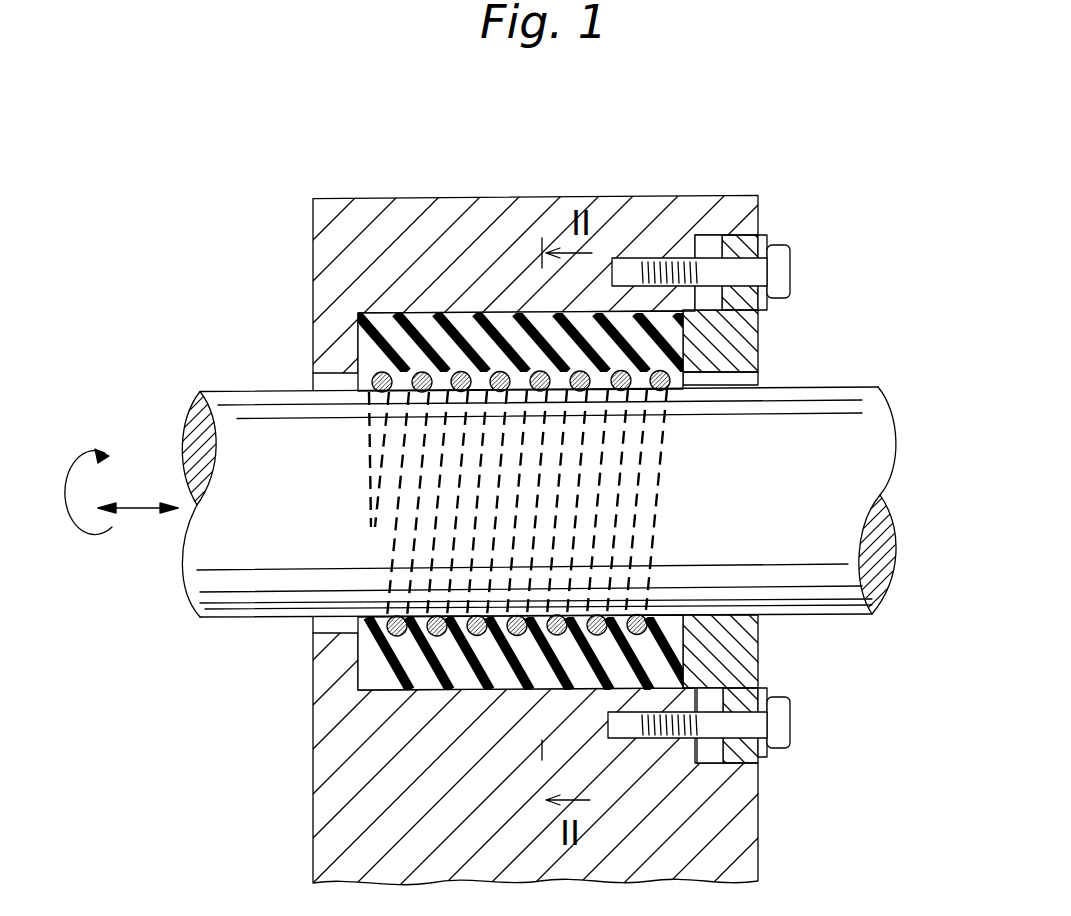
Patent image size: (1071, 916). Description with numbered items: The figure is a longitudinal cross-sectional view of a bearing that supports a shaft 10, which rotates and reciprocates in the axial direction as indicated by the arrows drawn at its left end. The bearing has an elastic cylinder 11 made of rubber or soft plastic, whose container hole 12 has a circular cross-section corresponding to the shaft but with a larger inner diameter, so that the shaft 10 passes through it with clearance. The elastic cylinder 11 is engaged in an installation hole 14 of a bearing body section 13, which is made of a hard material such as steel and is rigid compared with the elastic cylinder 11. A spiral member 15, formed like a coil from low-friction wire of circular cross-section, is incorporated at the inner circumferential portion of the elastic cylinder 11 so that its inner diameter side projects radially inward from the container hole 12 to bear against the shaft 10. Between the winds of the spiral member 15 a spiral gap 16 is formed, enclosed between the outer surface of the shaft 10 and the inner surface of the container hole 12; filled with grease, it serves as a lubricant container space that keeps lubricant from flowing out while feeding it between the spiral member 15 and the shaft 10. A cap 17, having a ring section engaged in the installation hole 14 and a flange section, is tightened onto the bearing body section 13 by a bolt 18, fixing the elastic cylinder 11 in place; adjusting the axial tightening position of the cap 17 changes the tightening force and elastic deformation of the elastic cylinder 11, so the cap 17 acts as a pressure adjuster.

The shaft 10 is at (218, 598).
The elastic cylinder 11 is at (365, 683).
The container hole 12 is at (665, 598).
The bearing body section 13 is at (343, 831).
The installation hole 14 is at (388, 313).
The spiral member 15 is at (428, 392).
The spiral gap 16 is at (481, 313).
The cap 17 is at (735, 350).
The bolt 18 is at (729, 275).